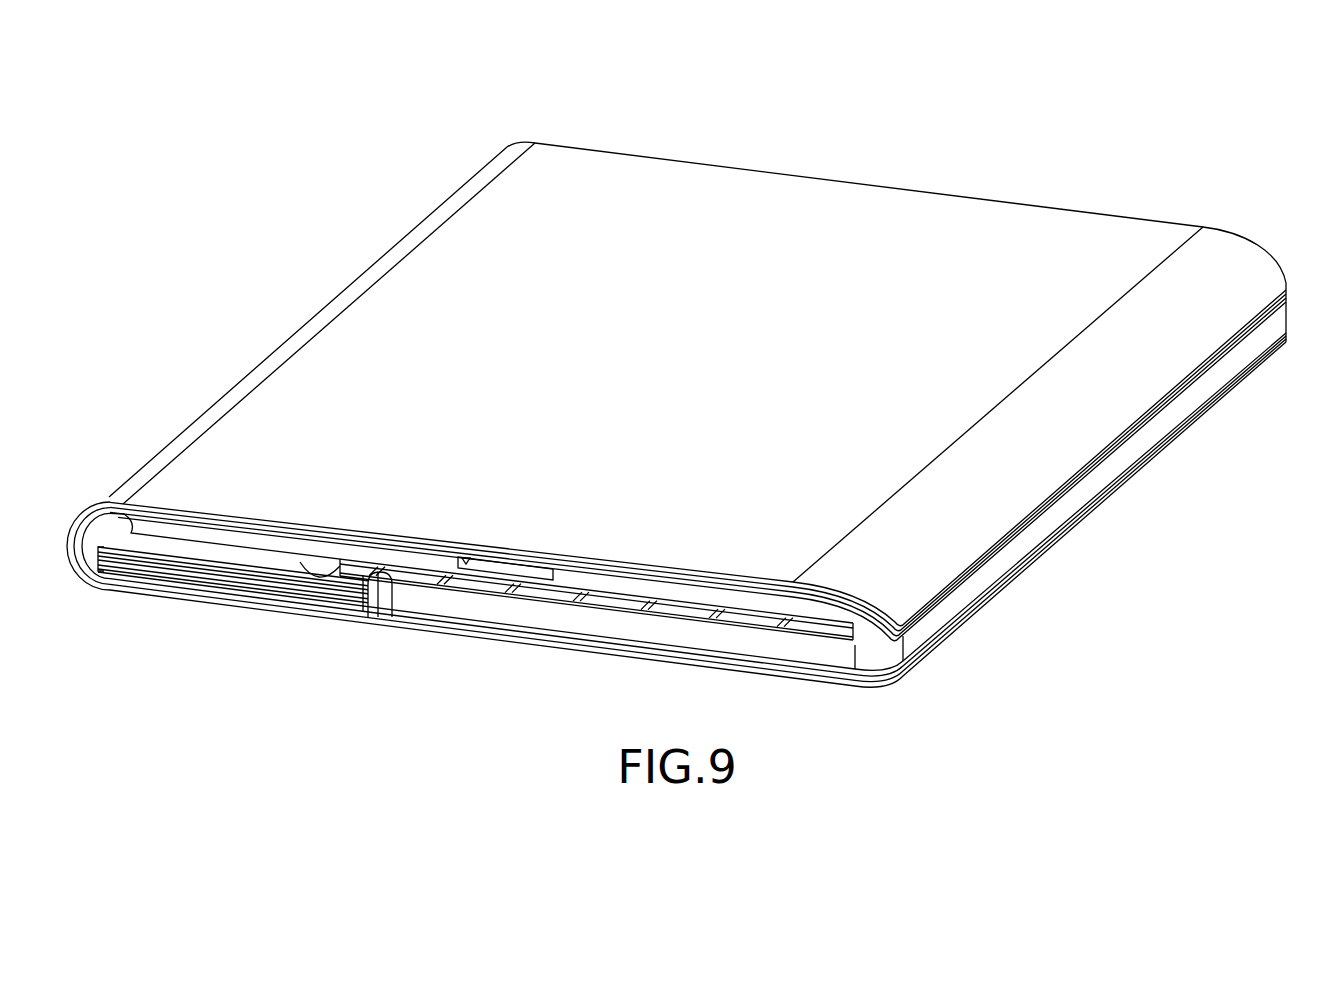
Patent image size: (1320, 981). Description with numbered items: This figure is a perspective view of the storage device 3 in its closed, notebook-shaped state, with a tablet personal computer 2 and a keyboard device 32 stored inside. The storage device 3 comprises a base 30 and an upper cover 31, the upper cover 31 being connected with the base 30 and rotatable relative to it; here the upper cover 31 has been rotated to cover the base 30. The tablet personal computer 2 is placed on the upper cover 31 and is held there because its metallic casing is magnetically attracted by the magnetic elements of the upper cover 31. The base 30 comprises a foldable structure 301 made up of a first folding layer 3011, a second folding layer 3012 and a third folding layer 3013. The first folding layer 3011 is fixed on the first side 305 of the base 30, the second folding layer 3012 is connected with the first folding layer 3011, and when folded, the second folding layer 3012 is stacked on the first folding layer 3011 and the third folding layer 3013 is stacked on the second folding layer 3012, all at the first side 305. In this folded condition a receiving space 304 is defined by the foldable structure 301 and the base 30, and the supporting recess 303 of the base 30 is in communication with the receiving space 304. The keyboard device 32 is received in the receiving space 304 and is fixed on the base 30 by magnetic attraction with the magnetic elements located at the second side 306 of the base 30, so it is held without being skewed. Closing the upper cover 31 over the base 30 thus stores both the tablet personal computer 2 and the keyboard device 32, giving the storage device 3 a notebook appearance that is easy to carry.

The storage device 3 is at (834, 138).
The upper cover 31 is at (944, 216).
The base 30 is at (736, 676).
The second side 306 is at (1000, 595).
The keyboard device 32 is at (604, 627).
The first side 305 is at (130, 583).
The foldable structure 301 is at (233, 635).
The first folding layer 3011 is at (165, 675).
The second folding layer 3012 is at (307, 577).
The third folding layer 3013 is at (243, 570).
The supporting recess 303 is at (366, 558).
The receiving space 304 is at (366, 614).
The tablet personal computer 2 is at (658, 585).